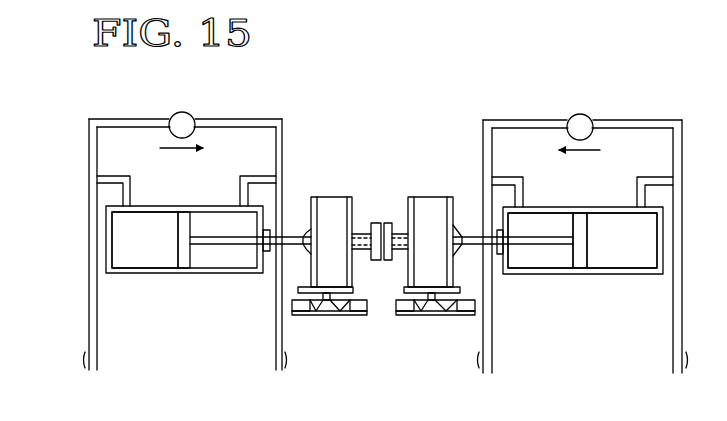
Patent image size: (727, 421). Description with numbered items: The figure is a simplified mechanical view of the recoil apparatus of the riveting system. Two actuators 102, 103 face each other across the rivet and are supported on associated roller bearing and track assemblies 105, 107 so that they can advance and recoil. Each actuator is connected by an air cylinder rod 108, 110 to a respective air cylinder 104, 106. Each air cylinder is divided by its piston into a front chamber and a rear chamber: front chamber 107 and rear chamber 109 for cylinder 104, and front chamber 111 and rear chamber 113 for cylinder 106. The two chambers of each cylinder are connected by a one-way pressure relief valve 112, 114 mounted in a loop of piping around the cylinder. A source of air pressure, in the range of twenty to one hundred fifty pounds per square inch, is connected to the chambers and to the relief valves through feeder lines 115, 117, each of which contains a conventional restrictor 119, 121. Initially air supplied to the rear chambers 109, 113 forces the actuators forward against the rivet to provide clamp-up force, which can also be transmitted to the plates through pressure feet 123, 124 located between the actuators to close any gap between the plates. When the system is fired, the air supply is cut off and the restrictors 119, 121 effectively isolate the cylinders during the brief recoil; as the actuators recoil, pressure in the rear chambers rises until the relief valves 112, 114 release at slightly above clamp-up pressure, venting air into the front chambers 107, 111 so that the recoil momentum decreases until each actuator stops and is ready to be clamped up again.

The actuator 102 is at (337, 196).
The actuator 103 is at (423, 196).
The air cylinder 104 is at (176, 287).
The roller bearing and track assembly 105 is at (331, 316).
The air cylinder 106 is at (567, 287).
The front chamber 107 is at (208, 222).
The air cylinder rod 108 is at (292, 228).
The rear chamber 109 is at (137, 258).
The air cylinder rod 110 is at (465, 234).
The front chamber 111 is at (538, 225).
The one-way pressure relief valve 112 is at (196, 118).
The rear chamber 113 is at (628, 260).
The one-way pressure relief valve 114 is at (593, 120).
The feeder line 115 is at (89, 322).
The feeder line 117 is at (492, 332).
The restrictor 119 is at (273, 366).
The restrictor 121 is at (670, 366).
The pressure foot 123 is at (377, 222).
The pressure foot 124 is at (386, 261).